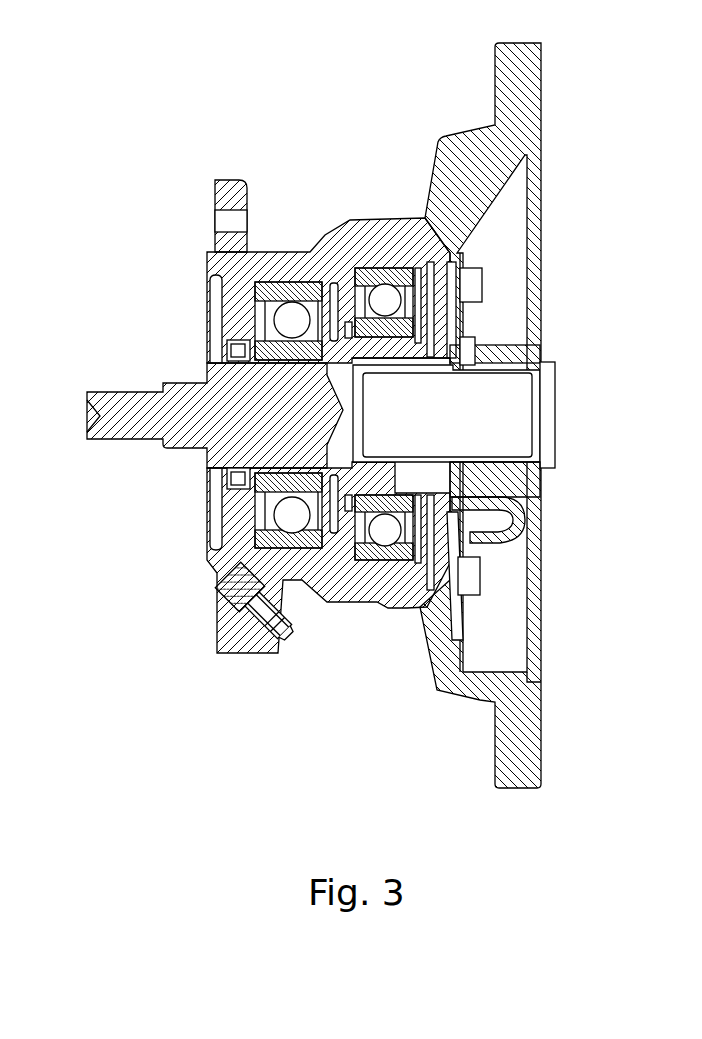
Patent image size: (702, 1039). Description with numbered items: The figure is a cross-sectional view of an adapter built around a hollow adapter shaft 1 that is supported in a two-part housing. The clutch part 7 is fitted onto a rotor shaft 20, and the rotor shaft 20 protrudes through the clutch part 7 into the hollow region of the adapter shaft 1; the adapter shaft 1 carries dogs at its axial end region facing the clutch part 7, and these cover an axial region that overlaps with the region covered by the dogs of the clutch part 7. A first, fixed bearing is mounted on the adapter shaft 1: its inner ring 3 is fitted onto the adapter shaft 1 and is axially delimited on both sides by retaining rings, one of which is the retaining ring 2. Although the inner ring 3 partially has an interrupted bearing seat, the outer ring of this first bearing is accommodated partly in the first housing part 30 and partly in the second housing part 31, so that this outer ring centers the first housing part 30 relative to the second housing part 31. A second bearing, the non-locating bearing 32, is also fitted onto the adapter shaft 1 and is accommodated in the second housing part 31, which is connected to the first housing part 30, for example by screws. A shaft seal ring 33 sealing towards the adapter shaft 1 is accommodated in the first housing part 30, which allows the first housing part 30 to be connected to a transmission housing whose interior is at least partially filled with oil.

The adapter shaft 1 is at (205, 415).
The retaining ring 2 is at (226, 592).
The inner ring of the fixed bearing 3 is at (385, 312).
The clutch part 7 is at (498, 472).
The rotor shaft 20 is at (490, 427).
The first housing part 30 is at (517, 742).
The second housing part 31 is at (358, 583).
The non-locating bearing 32 is at (292, 320).
The shaft seal ring 33 is at (232, 487).